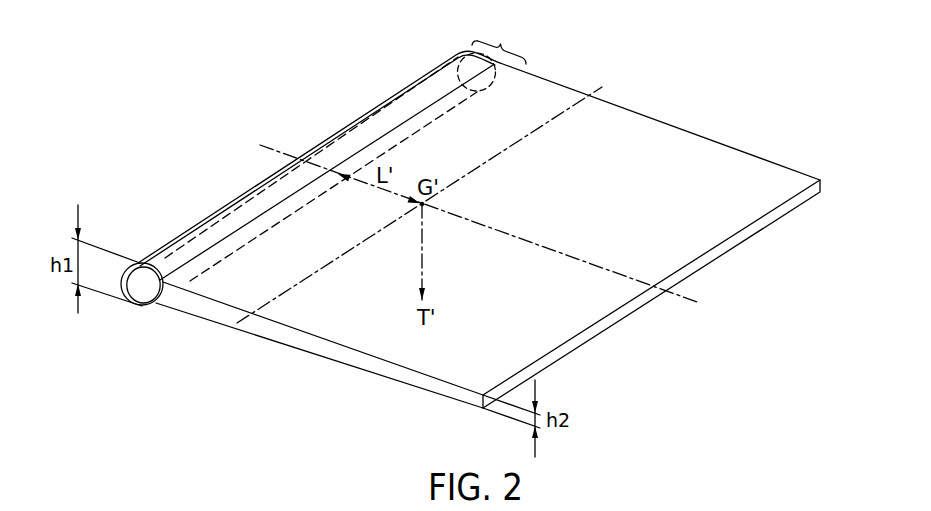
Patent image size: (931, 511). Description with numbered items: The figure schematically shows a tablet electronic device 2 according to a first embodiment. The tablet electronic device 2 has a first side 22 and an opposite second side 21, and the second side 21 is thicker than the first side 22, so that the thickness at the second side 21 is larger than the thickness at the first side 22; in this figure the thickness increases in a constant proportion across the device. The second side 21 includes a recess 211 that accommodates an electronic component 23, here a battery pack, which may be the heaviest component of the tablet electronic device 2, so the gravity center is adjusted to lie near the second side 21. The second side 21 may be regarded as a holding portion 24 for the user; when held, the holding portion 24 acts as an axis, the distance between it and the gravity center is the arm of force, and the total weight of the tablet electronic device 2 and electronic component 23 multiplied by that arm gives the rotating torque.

The tablet electronic device 2 is at (188, 69).
The second side 21 is at (319, 166).
The recess 211 is at (186, 232).
The first side 22 is at (704, 262).
The electronic component 23 is at (150, 292).
The holding portion 24 is at (492, 57).